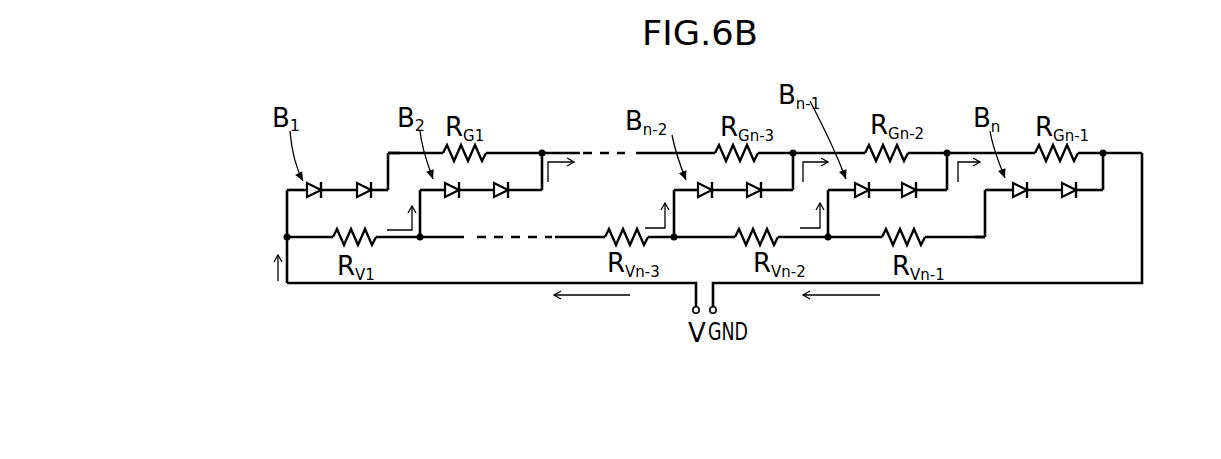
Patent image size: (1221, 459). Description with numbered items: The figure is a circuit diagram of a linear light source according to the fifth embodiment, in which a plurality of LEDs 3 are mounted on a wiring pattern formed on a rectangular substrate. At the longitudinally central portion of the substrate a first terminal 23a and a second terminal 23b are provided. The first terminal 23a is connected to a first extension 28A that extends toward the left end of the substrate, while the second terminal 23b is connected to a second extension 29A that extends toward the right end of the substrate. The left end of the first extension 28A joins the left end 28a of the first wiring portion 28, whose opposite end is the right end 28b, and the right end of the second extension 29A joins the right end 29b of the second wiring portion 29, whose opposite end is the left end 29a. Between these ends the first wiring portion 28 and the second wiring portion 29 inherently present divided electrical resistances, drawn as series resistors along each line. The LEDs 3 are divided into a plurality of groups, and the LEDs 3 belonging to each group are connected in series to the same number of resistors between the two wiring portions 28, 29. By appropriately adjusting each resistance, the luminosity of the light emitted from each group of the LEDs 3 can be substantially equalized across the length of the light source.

The LED 3 is at (357, 182).
The first terminal 23a is at (694, 312).
The second terminal 23b is at (716, 312).
The first wiring portion 28 is at (857, 237).
The left end of first wiring portion 28a is at (287, 237).
The right end of first wiring portion 28b is at (992, 237).
The first extension 28A is at (502, 284).
The second wiring portion 29 is at (697, 152).
The left end of second wiring portion 29a is at (388, 153).
The right end of second wiring portion 29b is at (1104, 151).
The second extension 29A is at (958, 284).